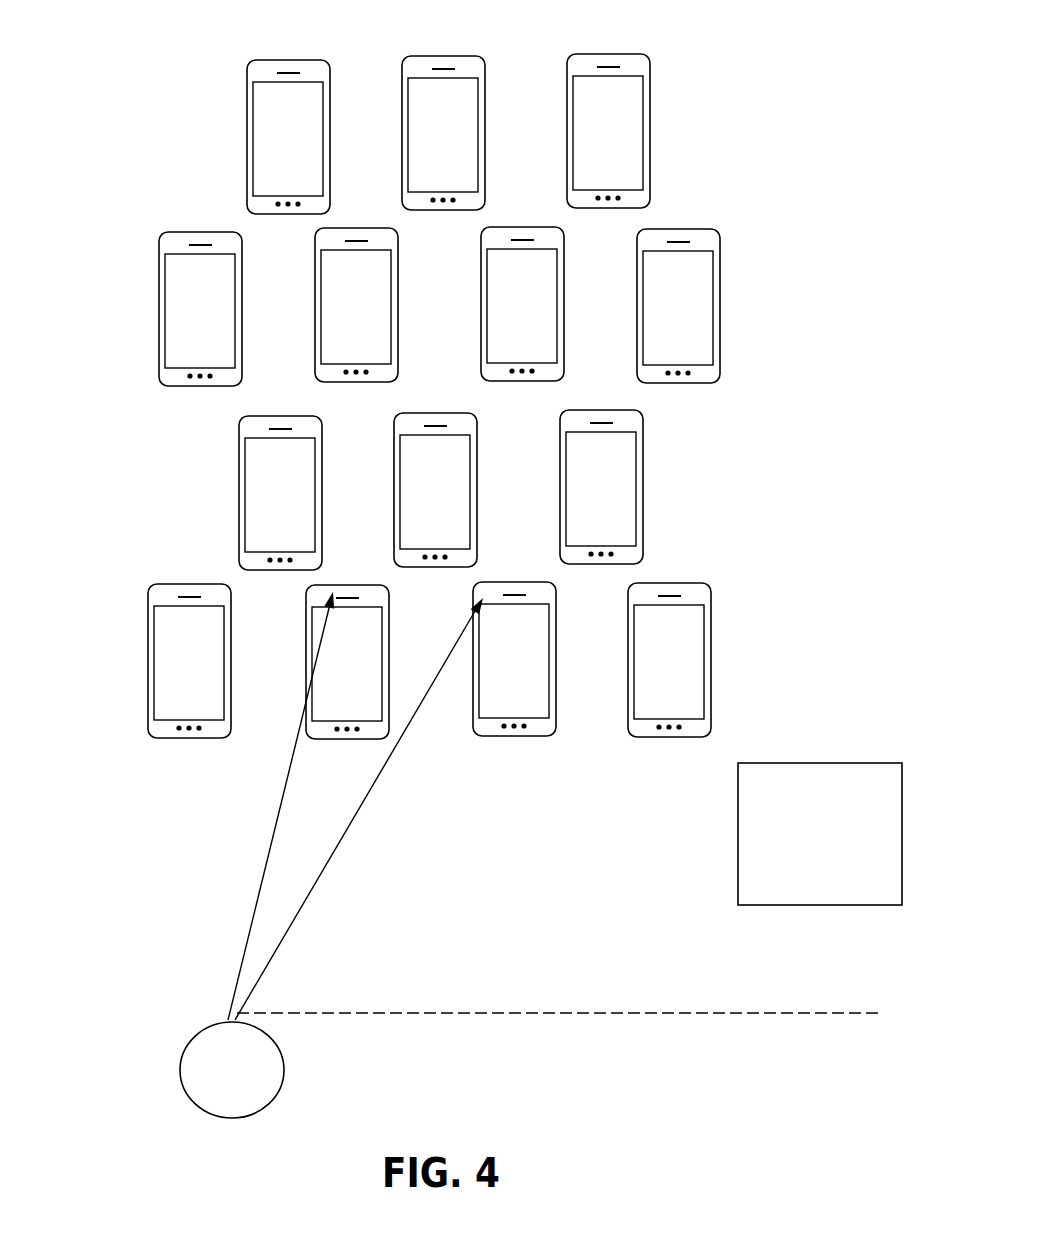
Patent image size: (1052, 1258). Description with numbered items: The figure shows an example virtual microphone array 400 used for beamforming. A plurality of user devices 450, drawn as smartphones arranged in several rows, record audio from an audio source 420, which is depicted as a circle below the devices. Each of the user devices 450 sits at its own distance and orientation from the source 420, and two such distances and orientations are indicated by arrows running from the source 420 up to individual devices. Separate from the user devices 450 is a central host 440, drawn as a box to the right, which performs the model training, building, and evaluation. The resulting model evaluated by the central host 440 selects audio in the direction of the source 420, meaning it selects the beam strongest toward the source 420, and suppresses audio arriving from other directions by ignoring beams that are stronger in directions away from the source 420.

The environment / system 400 is at (95, 116).
The user devices 450 is at (756, 182).
The audio source 420 is at (232, 1070).
The central host 440 is at (820, 834).